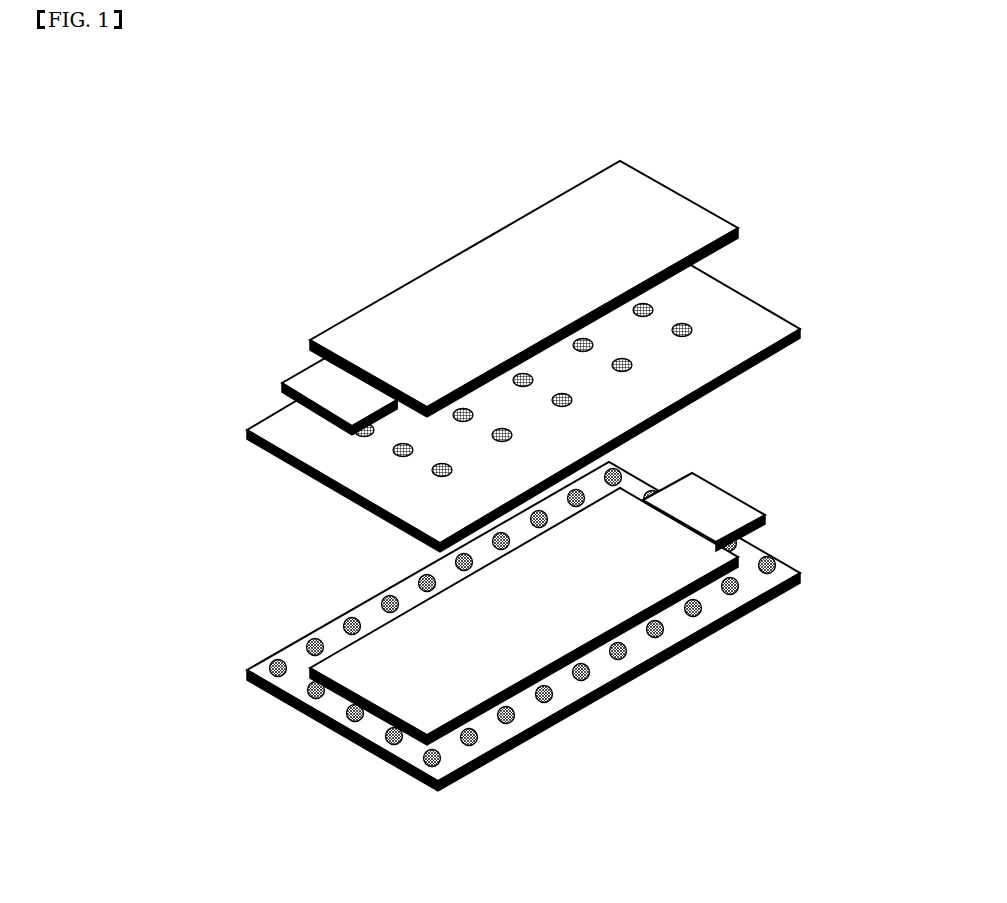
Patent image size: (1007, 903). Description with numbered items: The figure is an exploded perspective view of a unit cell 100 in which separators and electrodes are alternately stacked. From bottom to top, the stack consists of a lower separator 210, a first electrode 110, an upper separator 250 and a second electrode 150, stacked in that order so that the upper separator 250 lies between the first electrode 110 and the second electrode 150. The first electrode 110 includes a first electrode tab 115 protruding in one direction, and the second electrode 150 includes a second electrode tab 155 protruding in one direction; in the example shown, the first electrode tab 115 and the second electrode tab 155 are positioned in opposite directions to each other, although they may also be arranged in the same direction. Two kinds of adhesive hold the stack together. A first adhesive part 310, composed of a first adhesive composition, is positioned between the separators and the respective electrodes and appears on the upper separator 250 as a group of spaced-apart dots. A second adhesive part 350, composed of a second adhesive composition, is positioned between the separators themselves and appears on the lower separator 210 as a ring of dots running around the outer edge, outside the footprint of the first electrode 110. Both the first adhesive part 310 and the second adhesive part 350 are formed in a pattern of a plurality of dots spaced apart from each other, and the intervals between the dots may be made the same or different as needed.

The unit cell 100 is at (512, 92).
The first electrode 110 is at (395, 645).
The first electrode tab 115 is at (712, 503).
The second electrode 150 is at (387, 312).
The second electrode tab 155 is at (315, 378).
The lower separator 210 is at (333, 708).
The upper separator 250 is at (283, 425).
The first adhesive part 310 is at (708, 317).
The second adhesive part 350 is at (607, 679).